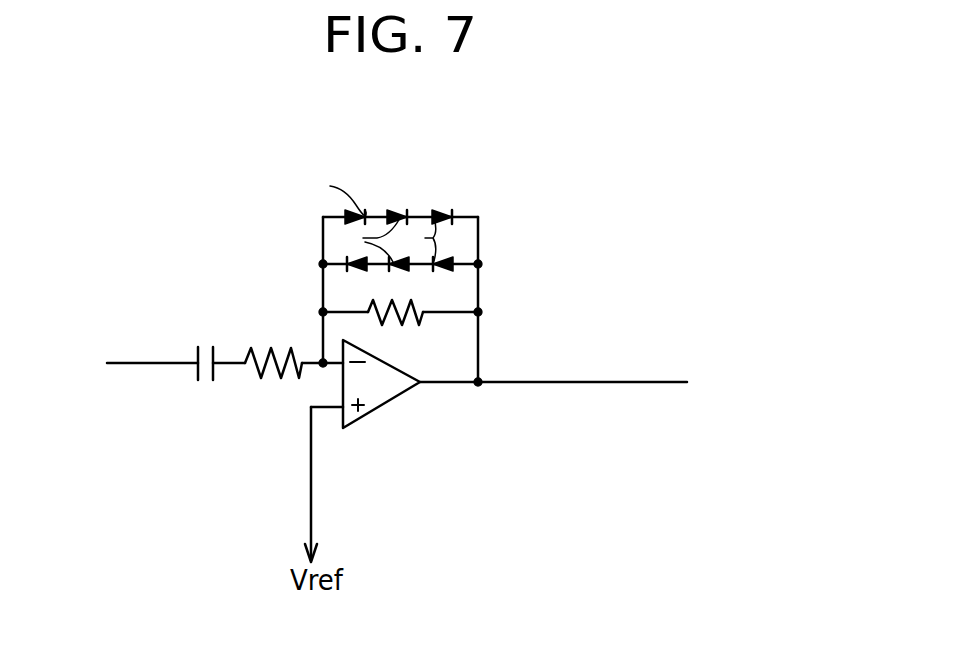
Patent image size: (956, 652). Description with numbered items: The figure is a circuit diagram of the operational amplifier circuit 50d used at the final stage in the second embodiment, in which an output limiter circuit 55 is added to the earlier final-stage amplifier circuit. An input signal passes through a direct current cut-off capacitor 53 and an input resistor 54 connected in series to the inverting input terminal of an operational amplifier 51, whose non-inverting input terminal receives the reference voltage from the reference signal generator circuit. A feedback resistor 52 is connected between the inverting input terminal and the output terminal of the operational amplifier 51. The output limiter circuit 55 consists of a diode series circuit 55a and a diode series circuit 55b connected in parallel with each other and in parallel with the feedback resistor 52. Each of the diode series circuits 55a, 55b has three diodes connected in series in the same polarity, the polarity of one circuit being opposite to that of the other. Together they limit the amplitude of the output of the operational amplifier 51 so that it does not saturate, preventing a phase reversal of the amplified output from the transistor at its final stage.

The operational amplifier circuit 50d is at (465, 303).
The operational amplifier 51 is at (378, 398).
The feedback resistor 52 is at (417, 328).
The direct current cut-off capacitor 53 is at (202, 343).
The input resistor 54 is at (272, 343).
The output limiter circuit 55 is at (432, 200).
The diode series circuit 55a is at (397, 189).
The diode series circuit 55b is at (470, 249).